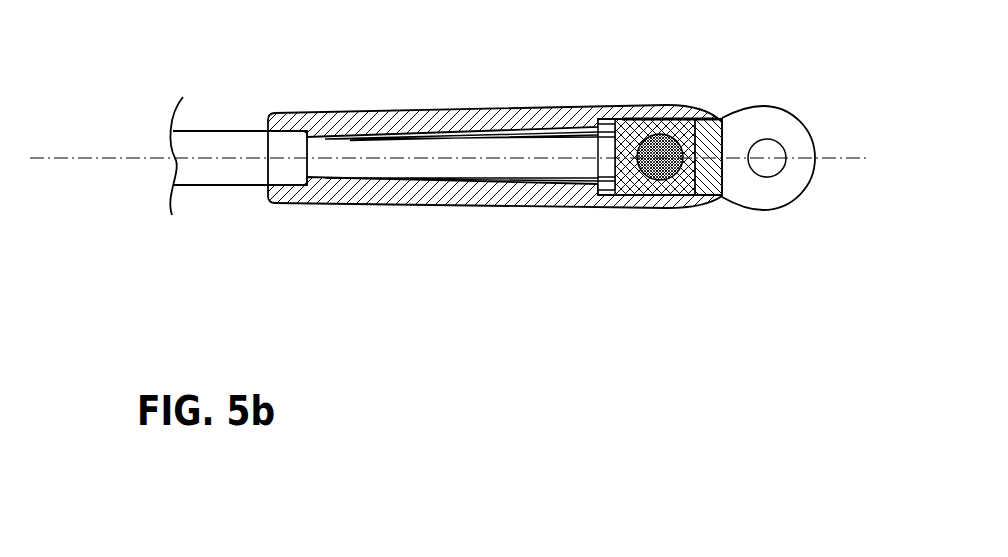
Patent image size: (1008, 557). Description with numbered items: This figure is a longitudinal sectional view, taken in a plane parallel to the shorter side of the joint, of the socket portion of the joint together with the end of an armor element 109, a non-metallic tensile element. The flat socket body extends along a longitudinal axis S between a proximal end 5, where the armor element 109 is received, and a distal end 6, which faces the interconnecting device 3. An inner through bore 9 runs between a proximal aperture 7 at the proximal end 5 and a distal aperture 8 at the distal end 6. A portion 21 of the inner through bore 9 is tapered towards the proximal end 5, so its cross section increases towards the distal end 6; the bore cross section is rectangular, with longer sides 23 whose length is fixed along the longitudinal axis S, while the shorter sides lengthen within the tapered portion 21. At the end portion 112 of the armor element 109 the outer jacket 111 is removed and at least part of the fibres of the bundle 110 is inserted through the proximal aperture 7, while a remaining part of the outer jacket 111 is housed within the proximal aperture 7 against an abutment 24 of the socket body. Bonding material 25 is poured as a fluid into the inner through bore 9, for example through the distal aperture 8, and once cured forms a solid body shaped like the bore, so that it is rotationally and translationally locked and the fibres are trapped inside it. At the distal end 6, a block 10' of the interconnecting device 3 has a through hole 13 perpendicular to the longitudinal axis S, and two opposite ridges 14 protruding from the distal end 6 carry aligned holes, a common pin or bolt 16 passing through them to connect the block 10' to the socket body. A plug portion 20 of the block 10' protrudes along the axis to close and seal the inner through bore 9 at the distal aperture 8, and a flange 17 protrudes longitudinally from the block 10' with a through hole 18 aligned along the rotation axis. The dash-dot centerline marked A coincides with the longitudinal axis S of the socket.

The outer jacket 111 is at (213, 130).
The armor element 109 is at (246, 115).
The proximal aperture 7 is at (284, 125).
The longer sides 23 is at (435, 133).
The bundle 110 is at (472, 150).
The end portion 112 is at (553, 147).
The plug portion 20 is at (607, 150).
The pin or bolt 16 is at (658, 153).
The block 10' is at (707, 66).
The interconnecting device 3 is at (733, 100).
The flange 17 is at (788, 128).
The through hole 18 is at (765, 162).
The ridge 14 is at (678, 192).
The distal end 6 is at (660, 205).
The distal aperture 8 is at (641, 203).
The through hole 13 is at (643, 175).
The bonding material 25 is at (567, 178).
The inner through bore 9 is at (543, 184).
The tapered portion 21 is at (477, 188).
The proximal end 5 is at (305, 193).
The abutment 24 is at (292, 188).
The longitudinal axis S is at (313, 153).
The axis A is at (445, 143).